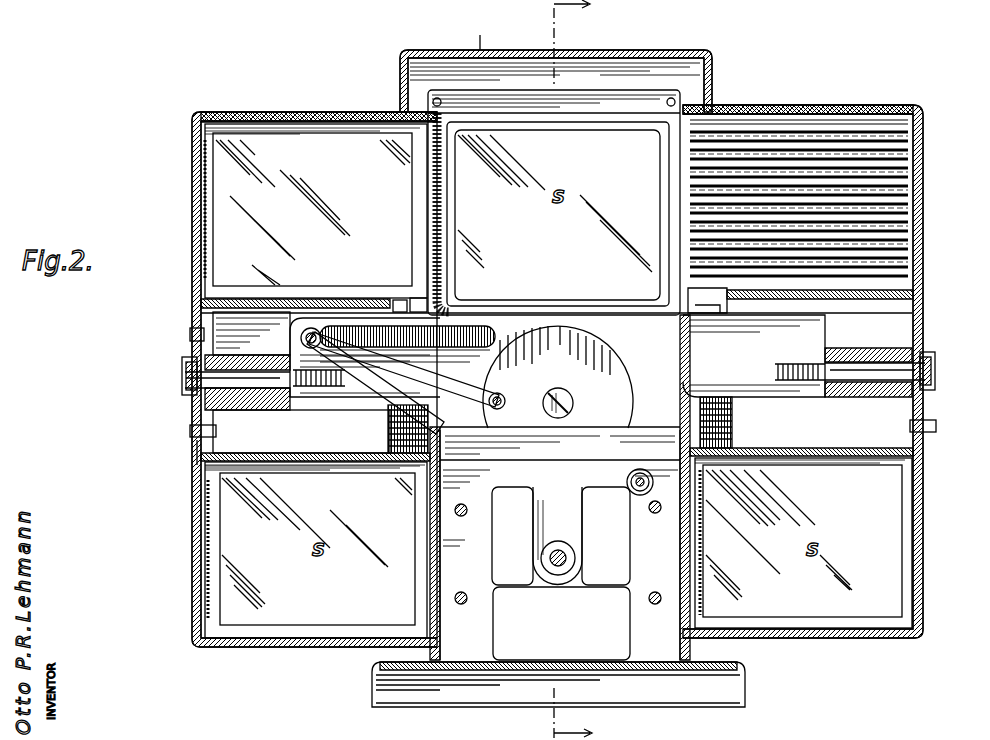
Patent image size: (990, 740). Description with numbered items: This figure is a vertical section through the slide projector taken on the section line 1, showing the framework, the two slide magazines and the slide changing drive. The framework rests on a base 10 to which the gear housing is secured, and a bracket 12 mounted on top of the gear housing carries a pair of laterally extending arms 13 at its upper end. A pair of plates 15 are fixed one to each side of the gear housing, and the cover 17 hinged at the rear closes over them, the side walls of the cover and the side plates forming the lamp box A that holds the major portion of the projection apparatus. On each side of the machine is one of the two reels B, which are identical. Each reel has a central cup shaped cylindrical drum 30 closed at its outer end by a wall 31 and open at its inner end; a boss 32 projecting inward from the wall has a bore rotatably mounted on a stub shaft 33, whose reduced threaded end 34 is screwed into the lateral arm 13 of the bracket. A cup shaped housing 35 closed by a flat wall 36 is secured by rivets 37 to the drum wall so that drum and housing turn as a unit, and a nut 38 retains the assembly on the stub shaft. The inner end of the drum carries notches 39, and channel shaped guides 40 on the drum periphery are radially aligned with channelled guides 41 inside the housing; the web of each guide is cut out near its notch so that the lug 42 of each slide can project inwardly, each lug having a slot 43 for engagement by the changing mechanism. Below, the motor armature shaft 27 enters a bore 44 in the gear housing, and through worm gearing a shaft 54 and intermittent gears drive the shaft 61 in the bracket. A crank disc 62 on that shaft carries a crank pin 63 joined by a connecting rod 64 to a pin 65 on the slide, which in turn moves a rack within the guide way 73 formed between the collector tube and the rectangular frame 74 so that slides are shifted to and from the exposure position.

The section line 1 is at (586, 369).
The base 10 is at (432, 703).
The bracket 12 is at (560, 443).
The laterally extending arms 13 is at (308, 405).
The plates 15 is at (444, 570).
The cover 17 is at (652, 50).
The armature shaft 27 is at (558, 576).
The drum 30 is at (190, 430).
The wall 31 is at (197, 450).
The boss 32 is at (270, 400).
The stub shaft 33 is at (200, 380).
The reduced threaded end 34 is at (334, 402).
The housing 35 is at (312, 110).
The flat wall 36 is at (200, 516).
The rivets 37 is at (190, 336).
The nut 38 is at (182, 376).
The notches 39 is at (432, 300).
The channel shaped guides 40 is at (925, 285).
The channelled guides 41 is at (860, 160).
The lug 42 is at (395, 300).
The slot 43 is at (404, 298).
The bore 44 is at (577, 558).
The shaft 54 is at (633, 494).
The shaft 61 is at (548, 410).
The crank disc 62 is at (558, 377).
The crank pin 63 is at (508, 400).
The connecting rod 64 is at (458, 380).
The pin 65 is at (305, 330).
The guide way 73 is at (315, 320).
The rectangular frame 74 is at (630, 88).
The lamp box A is at (467, 33).
The reels B is at (192, 170).